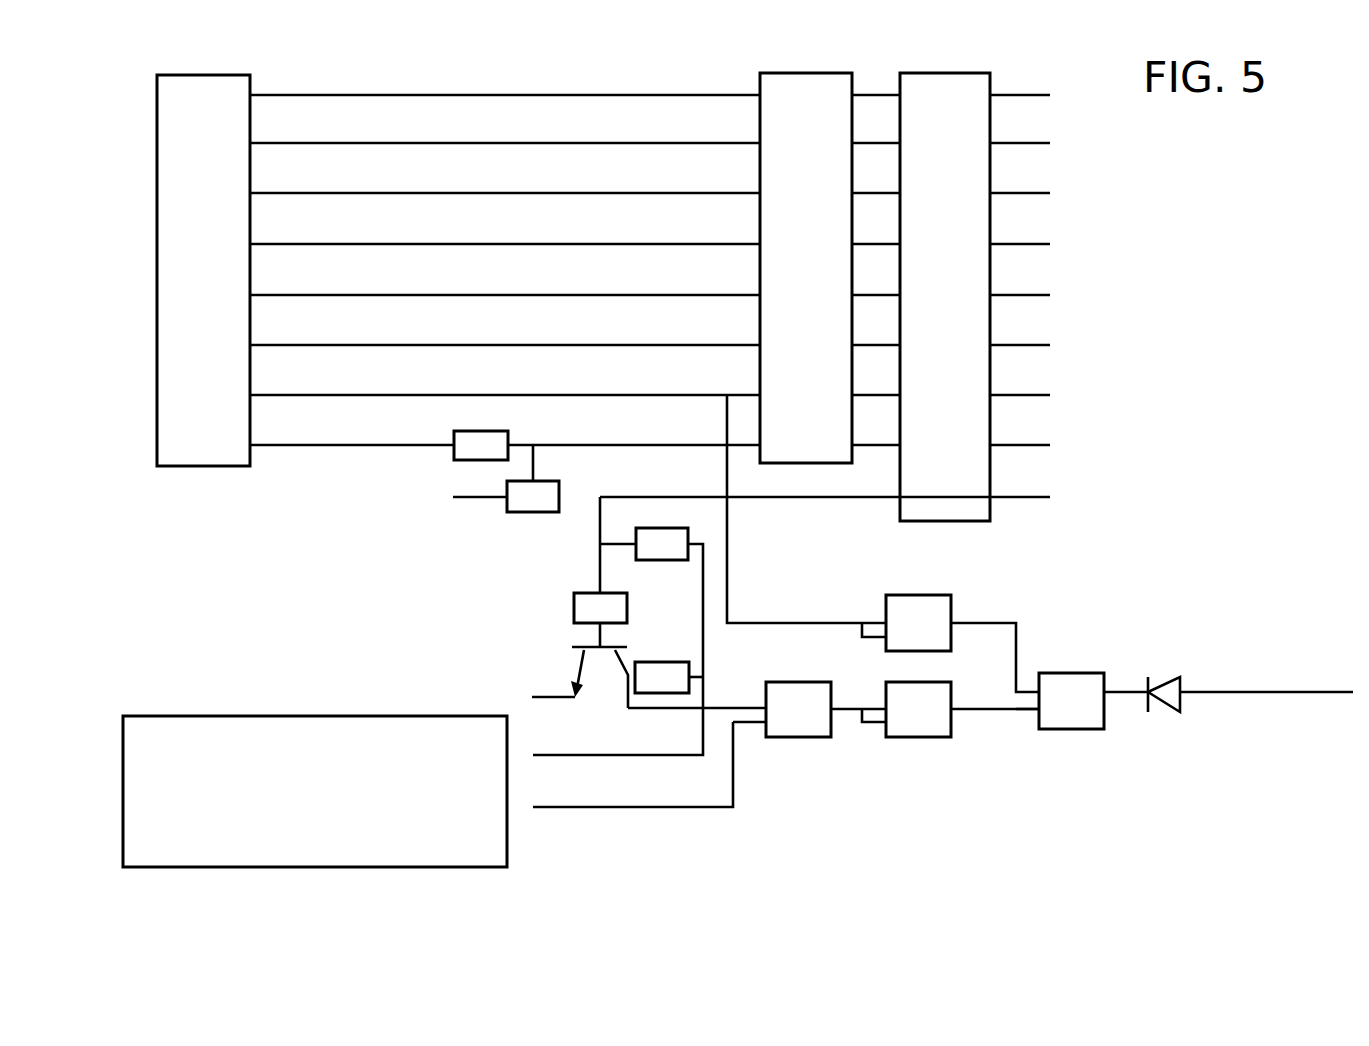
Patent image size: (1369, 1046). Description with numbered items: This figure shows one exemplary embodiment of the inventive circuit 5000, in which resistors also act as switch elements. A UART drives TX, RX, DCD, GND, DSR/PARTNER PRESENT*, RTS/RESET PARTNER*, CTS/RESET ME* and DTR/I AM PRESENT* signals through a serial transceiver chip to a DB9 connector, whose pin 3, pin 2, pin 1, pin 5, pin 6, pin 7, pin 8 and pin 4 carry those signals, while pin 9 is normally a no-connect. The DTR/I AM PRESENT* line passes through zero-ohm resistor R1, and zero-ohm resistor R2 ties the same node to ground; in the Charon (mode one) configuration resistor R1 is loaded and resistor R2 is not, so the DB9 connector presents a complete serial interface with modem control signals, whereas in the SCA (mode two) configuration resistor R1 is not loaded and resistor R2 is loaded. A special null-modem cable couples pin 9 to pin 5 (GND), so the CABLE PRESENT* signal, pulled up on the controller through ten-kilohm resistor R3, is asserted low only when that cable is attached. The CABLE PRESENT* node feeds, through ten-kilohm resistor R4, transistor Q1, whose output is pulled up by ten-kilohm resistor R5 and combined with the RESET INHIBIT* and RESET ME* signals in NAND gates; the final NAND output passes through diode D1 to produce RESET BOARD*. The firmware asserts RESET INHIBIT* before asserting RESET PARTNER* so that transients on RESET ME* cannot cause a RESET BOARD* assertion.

The circuit 5000 is at (1166, 181).
The resistor R1 is at (481, 445).
The resistor R2 is at (542, 538).
The resistor R3 is at (665, 558).
The resistor R4 is at (556, 562).
The resistor R5 is at (665, 663).
The transistor Q1 is at (546, 663).
The diode D1 is at (1167, 687).
The pin 1 is at (1020, 180).
The pin 2 is at (1020, 130).
The pin 3 is at (1020, 81).
The pin 4 is at (1020, 431).
The pin 5 is at (1020, 231).
The pin 6 is at (1020, 281).
The pin 7 is at (1020, 331).
The pin 8 is at (1020, 381).
The pin 9 is at (1020, 483).